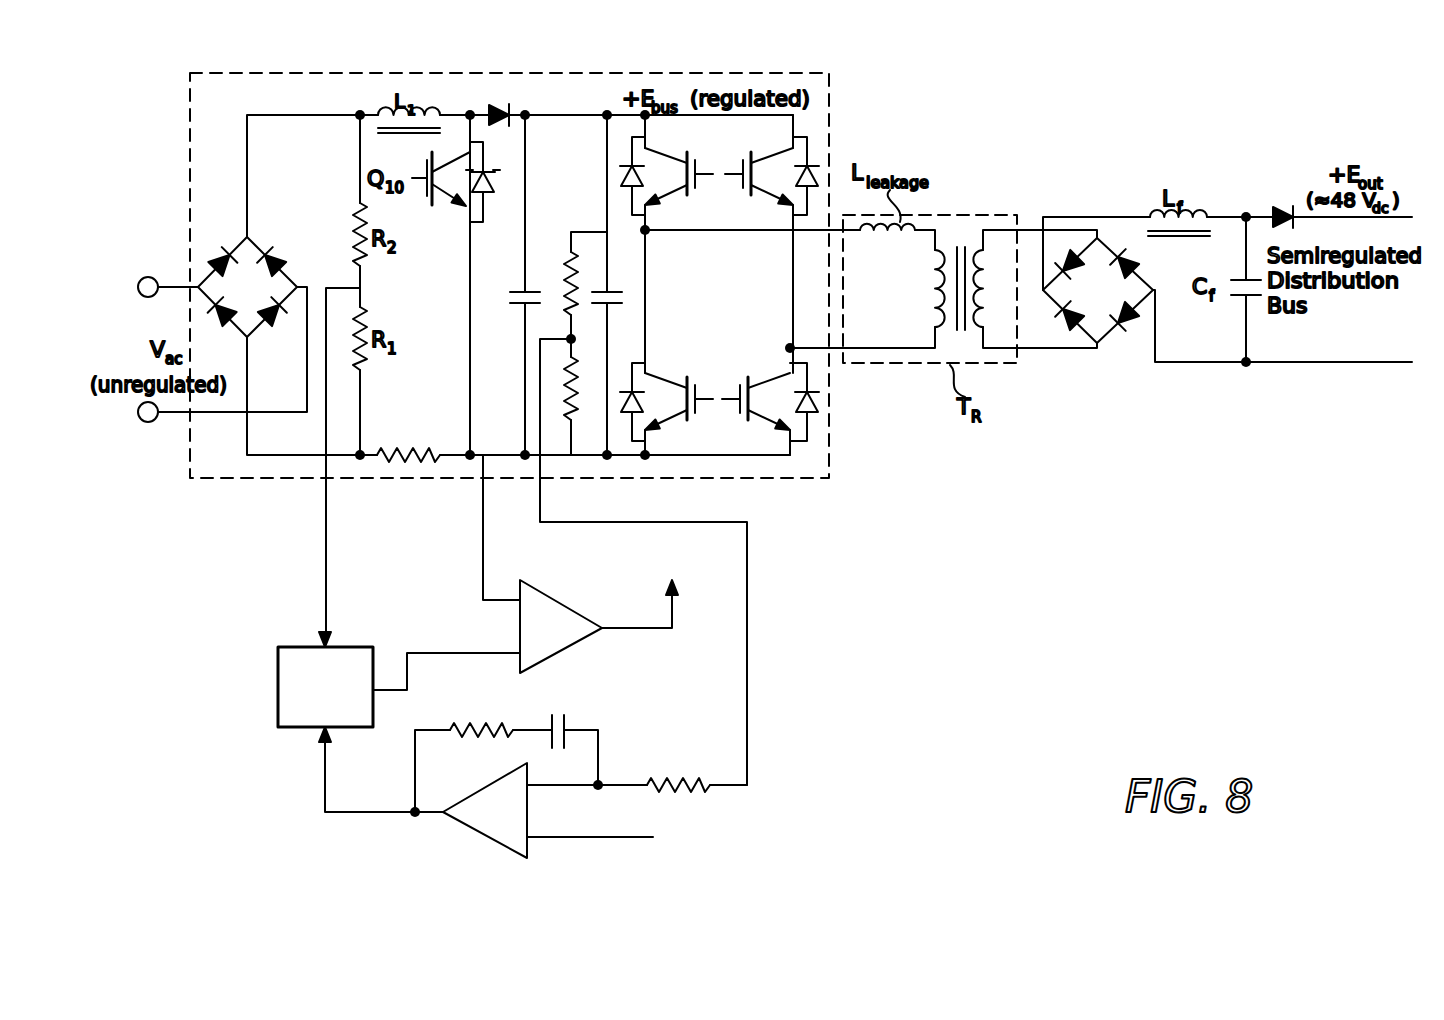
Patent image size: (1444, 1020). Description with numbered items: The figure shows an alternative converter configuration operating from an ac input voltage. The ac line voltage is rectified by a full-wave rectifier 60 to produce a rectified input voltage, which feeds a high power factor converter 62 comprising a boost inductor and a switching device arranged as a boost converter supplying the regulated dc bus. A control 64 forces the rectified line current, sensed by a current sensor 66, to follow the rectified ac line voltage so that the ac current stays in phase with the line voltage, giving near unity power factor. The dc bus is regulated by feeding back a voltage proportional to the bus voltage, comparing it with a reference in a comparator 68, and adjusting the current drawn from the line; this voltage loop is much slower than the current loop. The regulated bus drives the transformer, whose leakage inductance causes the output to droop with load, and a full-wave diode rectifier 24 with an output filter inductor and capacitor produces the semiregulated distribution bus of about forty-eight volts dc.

The full-wave diode rectifier 24 is at (1128, 350).
The full-wave rectifier 60 is at (210, 240).
The high power factor converter 62 is at (582, 72).
The control 64 is at (812, 590).
The current sensor 66 is at (402, 462).
The comparator 68 is at (478, 828).